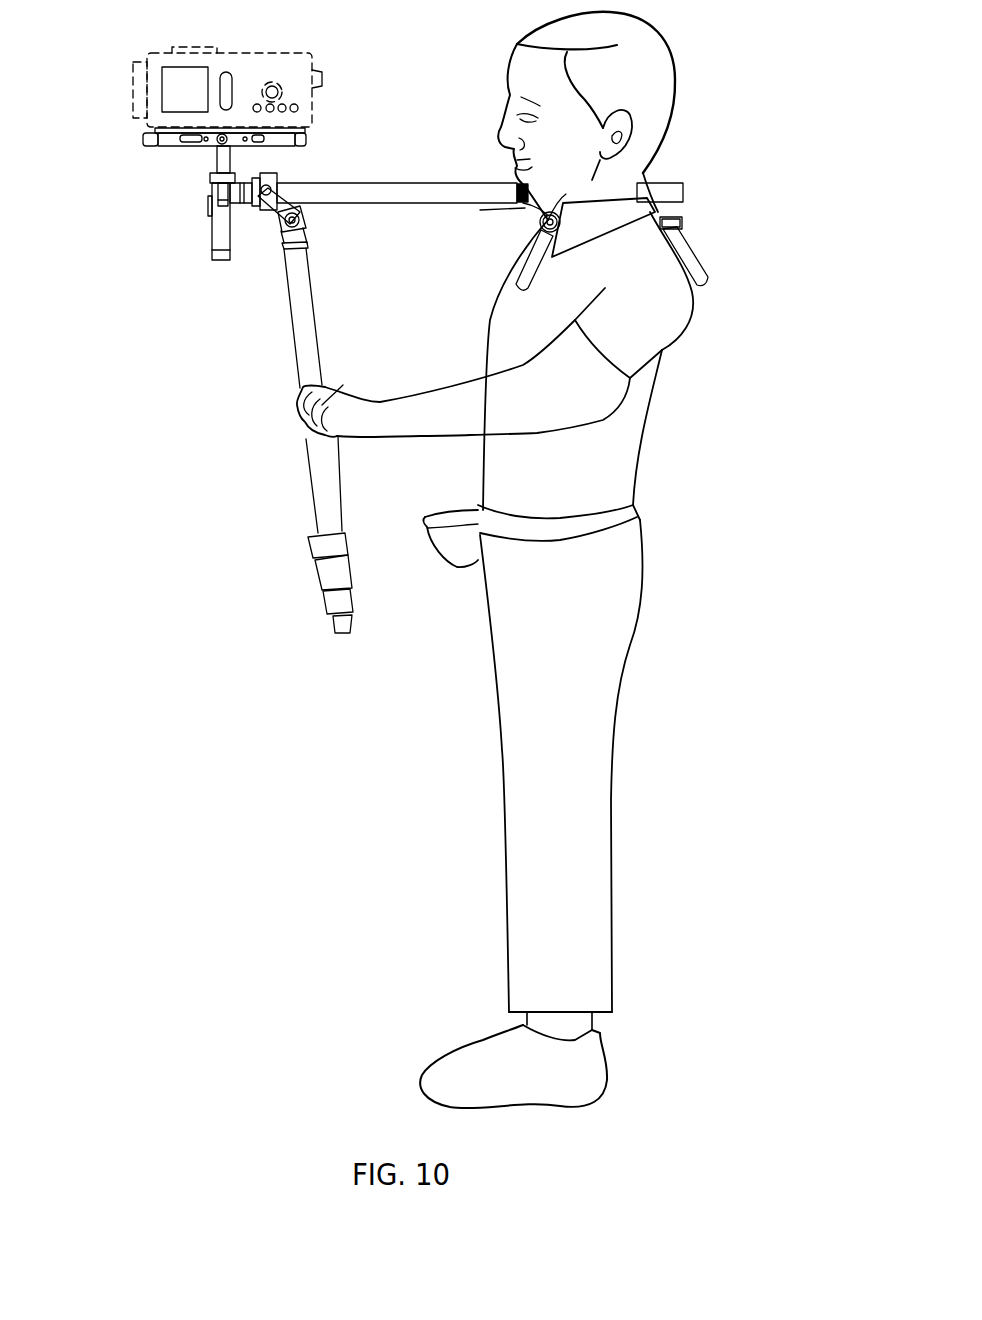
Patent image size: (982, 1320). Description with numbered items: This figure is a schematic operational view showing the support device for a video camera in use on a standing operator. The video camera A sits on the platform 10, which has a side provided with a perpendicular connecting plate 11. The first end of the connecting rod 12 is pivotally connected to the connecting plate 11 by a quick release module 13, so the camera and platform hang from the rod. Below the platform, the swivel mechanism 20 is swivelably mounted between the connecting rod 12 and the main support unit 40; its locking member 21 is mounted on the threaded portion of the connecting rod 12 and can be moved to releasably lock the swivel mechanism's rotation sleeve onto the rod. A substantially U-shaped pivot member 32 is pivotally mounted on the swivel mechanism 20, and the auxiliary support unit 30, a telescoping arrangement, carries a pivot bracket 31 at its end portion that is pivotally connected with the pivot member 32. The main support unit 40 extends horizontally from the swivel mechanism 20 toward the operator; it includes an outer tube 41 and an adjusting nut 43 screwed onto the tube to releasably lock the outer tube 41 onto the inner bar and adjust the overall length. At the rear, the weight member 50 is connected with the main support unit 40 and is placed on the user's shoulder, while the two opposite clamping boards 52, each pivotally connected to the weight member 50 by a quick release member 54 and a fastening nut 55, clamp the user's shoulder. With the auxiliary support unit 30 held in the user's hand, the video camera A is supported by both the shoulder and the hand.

The video camera A is at (268, 48).
The platform 10 is at (170, 150).
The connecting plate 11 is at (218, 157).
The connecting rod 12 is at (235, 205).
The quick release module 13 is at (220, 210).
The swivel mechanism 20 is at (335, 194).
The locking member 21 is at (257, 206).
The auxiliary support unit 30 is at (292, 348).
The pivot bracket 31 is at (306, 229).
The pivot member 32 is at (303, 208).
The main support unit 40 is at (480, 160).
The outer tube 41 is at (378, 185).
The adjusting nut 43 is at (525, 206).
The weight member 50 is at (683, 179).
The clamping boards 52 is at (515, 262).
The quick release member 54 is at (682, 215).
The fastening nut 55 is at (540, 230).